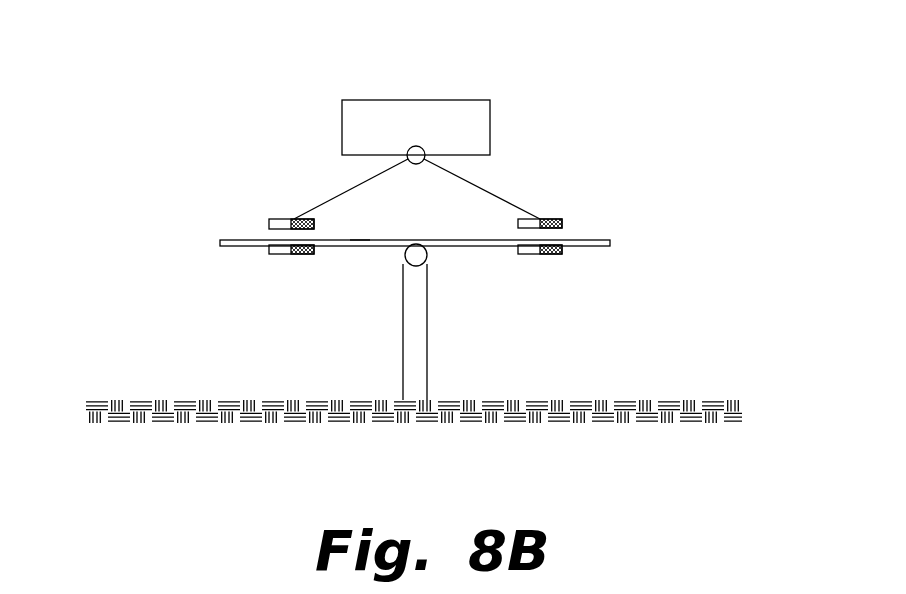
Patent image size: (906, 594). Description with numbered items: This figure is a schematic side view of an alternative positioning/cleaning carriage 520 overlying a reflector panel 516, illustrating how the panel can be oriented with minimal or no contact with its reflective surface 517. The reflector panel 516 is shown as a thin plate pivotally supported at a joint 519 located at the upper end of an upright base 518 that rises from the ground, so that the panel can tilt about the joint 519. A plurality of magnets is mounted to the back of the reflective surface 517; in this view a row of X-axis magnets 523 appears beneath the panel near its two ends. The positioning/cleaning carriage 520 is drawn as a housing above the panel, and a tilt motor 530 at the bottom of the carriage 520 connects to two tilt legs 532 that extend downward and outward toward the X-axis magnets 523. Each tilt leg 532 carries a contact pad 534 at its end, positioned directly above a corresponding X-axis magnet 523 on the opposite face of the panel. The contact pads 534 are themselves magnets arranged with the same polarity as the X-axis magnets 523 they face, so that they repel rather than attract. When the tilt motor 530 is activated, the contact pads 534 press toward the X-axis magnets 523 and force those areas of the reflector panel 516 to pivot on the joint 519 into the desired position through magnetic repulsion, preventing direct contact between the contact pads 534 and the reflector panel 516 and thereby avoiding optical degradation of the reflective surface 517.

The reflector panel 516 is at (610, 241).
The reflective surface 517 is at (360, 240).
The base 518 is at (402, 350).
The joint 519 is at (403, 254).
The positioning/cleaning carriage 520 is at (457, 100).
The X-axis magnets 523 is at (272, 253).
The tilt motor 530 is at (424, 151).
The tilt legs 532 is at (333, 194).
The contact pads 534 is at (268, 220).